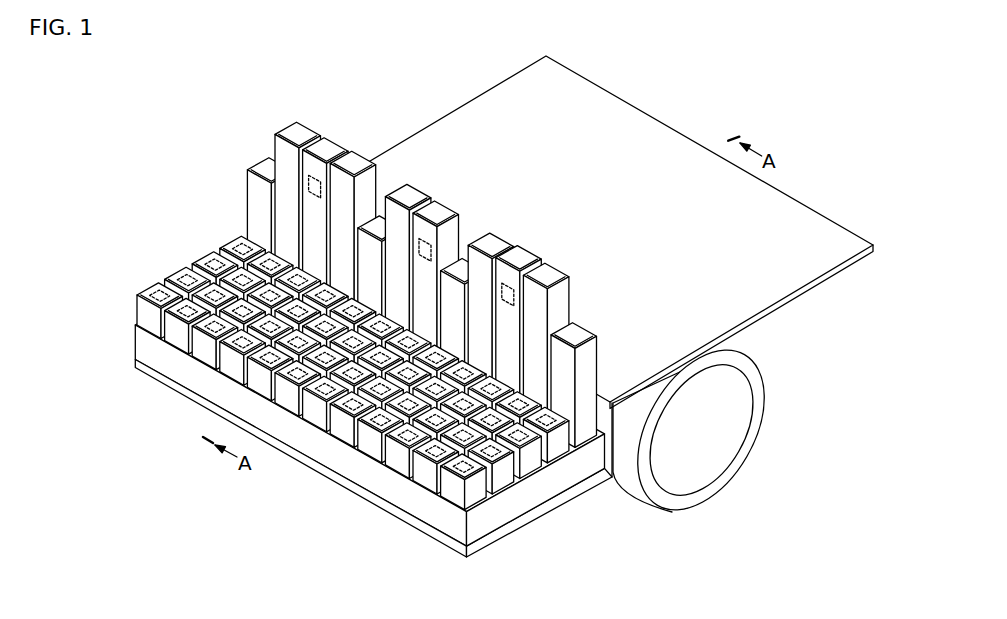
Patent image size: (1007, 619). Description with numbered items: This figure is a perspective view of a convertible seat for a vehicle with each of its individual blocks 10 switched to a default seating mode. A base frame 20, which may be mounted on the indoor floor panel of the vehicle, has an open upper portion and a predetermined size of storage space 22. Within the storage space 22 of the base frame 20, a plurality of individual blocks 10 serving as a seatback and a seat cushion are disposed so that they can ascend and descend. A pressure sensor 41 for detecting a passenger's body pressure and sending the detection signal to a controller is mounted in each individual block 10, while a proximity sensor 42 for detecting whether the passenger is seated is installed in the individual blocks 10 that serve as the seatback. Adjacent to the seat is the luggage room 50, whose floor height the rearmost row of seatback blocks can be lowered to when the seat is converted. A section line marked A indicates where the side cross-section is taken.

The individual block 10 is at (395, 315).
The base frame 20 is at (445, 523).
The storage space 22 is at (518, 481).
The pressure sensor 41 is at (227, 257).
The proximity sensor 42 is at (313, 177).
The luggage room 50 is at (808, 238).